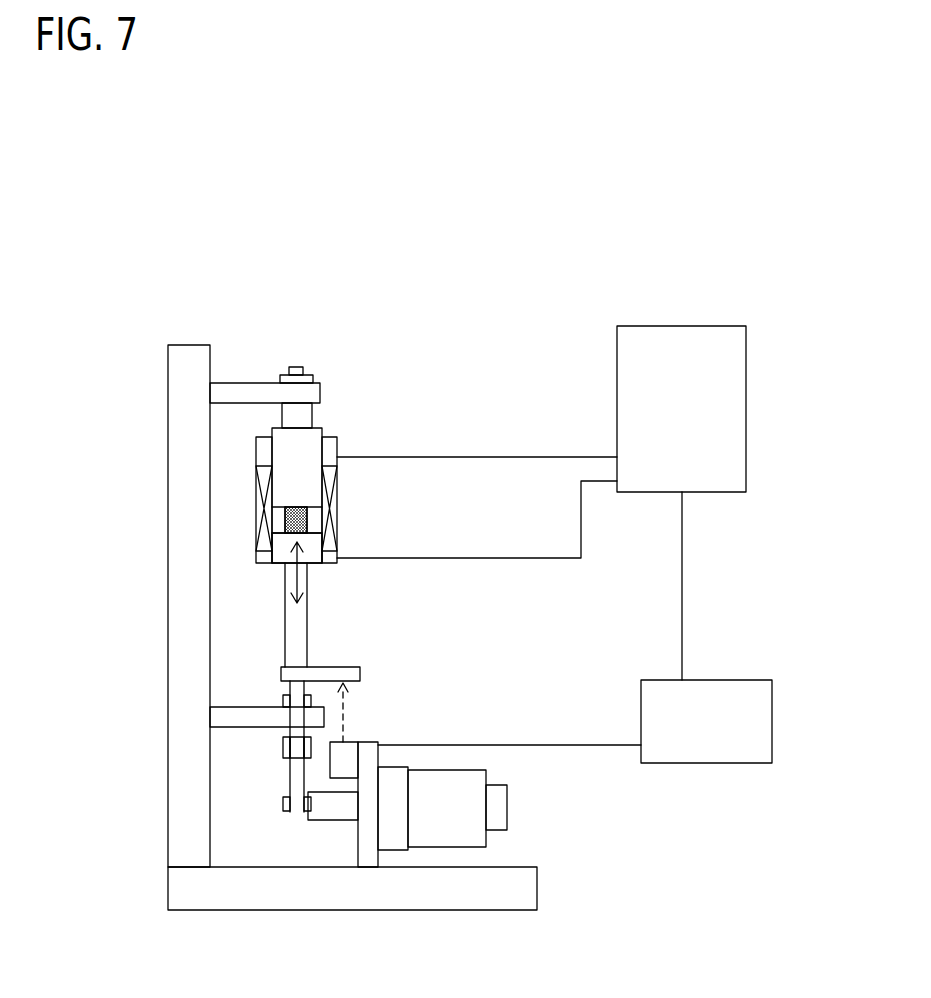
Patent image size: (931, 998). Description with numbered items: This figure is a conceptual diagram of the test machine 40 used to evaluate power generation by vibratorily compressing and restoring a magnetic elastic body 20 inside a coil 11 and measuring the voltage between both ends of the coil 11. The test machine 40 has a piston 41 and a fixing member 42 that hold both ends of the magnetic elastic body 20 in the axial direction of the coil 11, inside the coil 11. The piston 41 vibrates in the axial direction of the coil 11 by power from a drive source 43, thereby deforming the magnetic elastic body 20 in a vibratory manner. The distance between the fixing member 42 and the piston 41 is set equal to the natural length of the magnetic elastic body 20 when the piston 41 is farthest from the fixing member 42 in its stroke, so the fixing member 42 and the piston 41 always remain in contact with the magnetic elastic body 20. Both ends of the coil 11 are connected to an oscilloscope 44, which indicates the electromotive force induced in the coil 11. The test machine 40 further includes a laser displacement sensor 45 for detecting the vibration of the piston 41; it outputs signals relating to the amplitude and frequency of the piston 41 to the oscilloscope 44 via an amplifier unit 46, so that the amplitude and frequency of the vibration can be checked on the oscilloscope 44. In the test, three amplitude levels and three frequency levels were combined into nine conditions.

The test machine 40 is at (545, 365).
The fixing member 42 is at (285, 438).
The coil 11 is at (337, 504).
The magnetic elastic body 20 is at (309, 523).
The piston 41 is at (310, 555).
The laser displacement sensor 45 is at (352, 742).
The drive source 43 is at (452, 827).
The oscilloscope 44 is at (746, 385).
The amplifier unit 46 is at (735, 679).